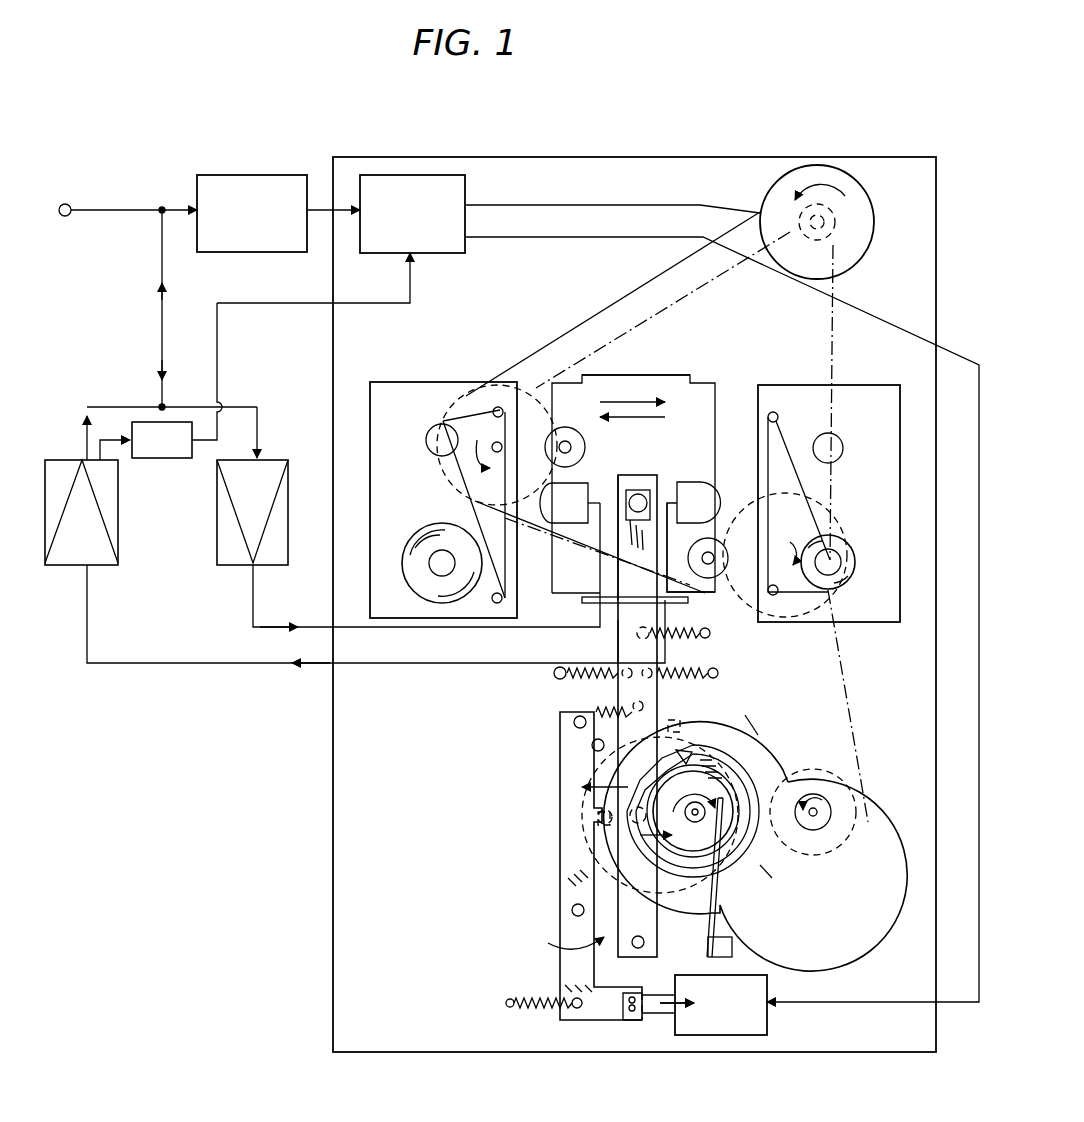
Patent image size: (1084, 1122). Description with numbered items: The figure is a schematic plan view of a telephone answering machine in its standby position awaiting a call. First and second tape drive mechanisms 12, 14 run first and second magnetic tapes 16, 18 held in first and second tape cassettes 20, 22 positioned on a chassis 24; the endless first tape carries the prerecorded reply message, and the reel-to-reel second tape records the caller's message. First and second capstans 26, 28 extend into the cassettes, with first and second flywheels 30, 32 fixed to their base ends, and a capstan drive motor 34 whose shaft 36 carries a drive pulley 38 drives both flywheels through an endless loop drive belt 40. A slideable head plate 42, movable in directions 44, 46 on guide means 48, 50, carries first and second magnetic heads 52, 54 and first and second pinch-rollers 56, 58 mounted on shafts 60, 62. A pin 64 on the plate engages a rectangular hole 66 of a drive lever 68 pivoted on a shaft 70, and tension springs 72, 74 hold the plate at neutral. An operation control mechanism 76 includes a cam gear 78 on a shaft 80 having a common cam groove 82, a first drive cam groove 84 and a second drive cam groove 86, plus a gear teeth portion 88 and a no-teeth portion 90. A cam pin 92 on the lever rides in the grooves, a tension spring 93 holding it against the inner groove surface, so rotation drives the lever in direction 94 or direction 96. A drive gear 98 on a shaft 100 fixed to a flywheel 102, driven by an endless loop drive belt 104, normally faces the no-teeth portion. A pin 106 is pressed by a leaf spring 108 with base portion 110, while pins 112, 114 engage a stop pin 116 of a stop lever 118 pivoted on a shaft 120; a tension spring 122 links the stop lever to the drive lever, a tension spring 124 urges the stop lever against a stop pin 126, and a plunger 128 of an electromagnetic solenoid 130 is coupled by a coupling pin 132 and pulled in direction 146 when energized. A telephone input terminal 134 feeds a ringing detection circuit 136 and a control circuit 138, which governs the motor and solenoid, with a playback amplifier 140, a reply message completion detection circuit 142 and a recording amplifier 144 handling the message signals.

The first tape drive mechanism 12 is at (824, 482).
The second tape drive mechanism 14 is at (449, 479).
The first magnetic tape 16 is at (790, 438).
The second magnetic tape 18 is at (503, 529).
The first tape cassette 20 is at (903, 390).
The second tape cassette 22 is at (371, 392).
The chassis 24 is at (631, 163).
The first capstan 26 is at (772, 555).
The second capstan 28 is at (504, 446).
The first flywheel 30 is at (840, 506).
The second flywheel 32 is at (540, 394).
The capstan drive motor 34 is at (828, 225).
The motor shaft 36 is at (835, 218).
The drive pulley 38 is at (808, 236).
The endless loop drive belt 40 is at (836, 352).
The head plate 42 is at (706, 390).
The first direction 44 is at (630, 398).
The second direction 46 is at (626, 420).
The guide means 48 is at (657, 375).
The guide means 50 is at (684, 602).
The first magnetic head 52 is at (697, 480).
The second magnetic head 54 is at (554, 524).
The first pinch-roller 56 is at (722, 515).
The second pinch-roller 58 is at (566, 427).
The shaft 60 is at (701, 557).
The shaft 62 is at (572, 449).
The pin 64 is at (637, 494).
The rectangular hole 66 is at (620, 540).
The drive lever 68 is at (617, 641).
The shaft 70 is at (625, 703).
The tension spring 72 is at (686, 678).
The tension spring 74 is at (600, 679).
The operation control mechanism 76 is at (756, 810).
The cam gear 78 is at (790, 862).
The shaft 80 is at (700, 806).
The common cam groove 82 is at (672, 860).
The first drive cam groove 84 is at (750, 765).
The second drive cam groove 86 is at (760, 745).
The gear teeth portion 88 is at (745, 715).
The no-teeth portion 90 is at (790, 896).
The cam pin 92 is at (592, 858).
The tension spring 93 is at (678, 640).
The direction 94 is at (676, 819).
The direction 96 is at (577, 787).
The drive gear 98 is at (818, 814).
The shaft 100 is at (830, 808).
The flywheel 102 is at (852, 838).
The endless loop drive belt 104 is at (852, 700).
The pin 106 is at (678, 846).
The leaf spring 108 is at (725, 928).
The base portion 110 is at (733, 950).
The pin 112 is at (605, 828).
The pin 114 is at (680, 708).
The stop pin 116 is at (597, 816).
The stop lever 118 is at (566, 884).
The shaft 120 is at (572, 910).
The tension spring 122 is at (561, 724).
The tension spring 124 is at (545, 1008).
The stop pin 126 is at (591, 748).
The plunger 128 is at (661, 1016).
The electromagnetic solenoid 130 is at (768, 985).
The coupling pin 132 is at (628, 1022).
The telephone input terminal 134 is at (70, 205).
The ringing detection circuit 136 is at (261, 178).
The control circuit 138 is at (470, 191).
The playback amplifier 140 is at (118, 521).
The reply message completion detection circuit 142 is at (165, 459).
The recording amplifier 144 is at (290, 464).
The direction 146 is at (700, 1000).